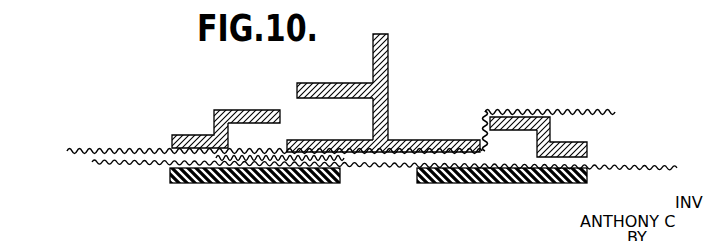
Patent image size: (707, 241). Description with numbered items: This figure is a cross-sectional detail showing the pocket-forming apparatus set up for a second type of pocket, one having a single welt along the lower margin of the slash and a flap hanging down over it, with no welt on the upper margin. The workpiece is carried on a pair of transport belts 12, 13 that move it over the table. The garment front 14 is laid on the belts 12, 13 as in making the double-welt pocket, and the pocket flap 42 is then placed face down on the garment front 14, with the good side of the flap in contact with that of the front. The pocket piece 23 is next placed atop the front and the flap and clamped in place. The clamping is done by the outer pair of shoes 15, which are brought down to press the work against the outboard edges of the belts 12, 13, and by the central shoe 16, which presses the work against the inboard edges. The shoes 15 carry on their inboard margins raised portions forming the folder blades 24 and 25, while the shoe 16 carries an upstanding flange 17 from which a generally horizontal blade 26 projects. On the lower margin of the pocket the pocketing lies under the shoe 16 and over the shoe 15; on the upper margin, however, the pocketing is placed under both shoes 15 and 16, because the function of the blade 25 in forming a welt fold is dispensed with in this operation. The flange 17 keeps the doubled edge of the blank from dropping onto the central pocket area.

The belt 12 is at (513, 184).
The belt 13 is at (265, 184).
The jacket front piece 14 is at (120, 165).
The shoe 15 is at (189, 132).
The shoe 16 is at (420, 136).
The upstanding flange 17 is at (389, 59).
The pocket piece 23 is at (115, 146).
The blade 24 is at (517, 131).
The blade 25 is at (250, 110).
The blade 26 is at (335, 83).
The pocket flap 42 is at (353, 164).